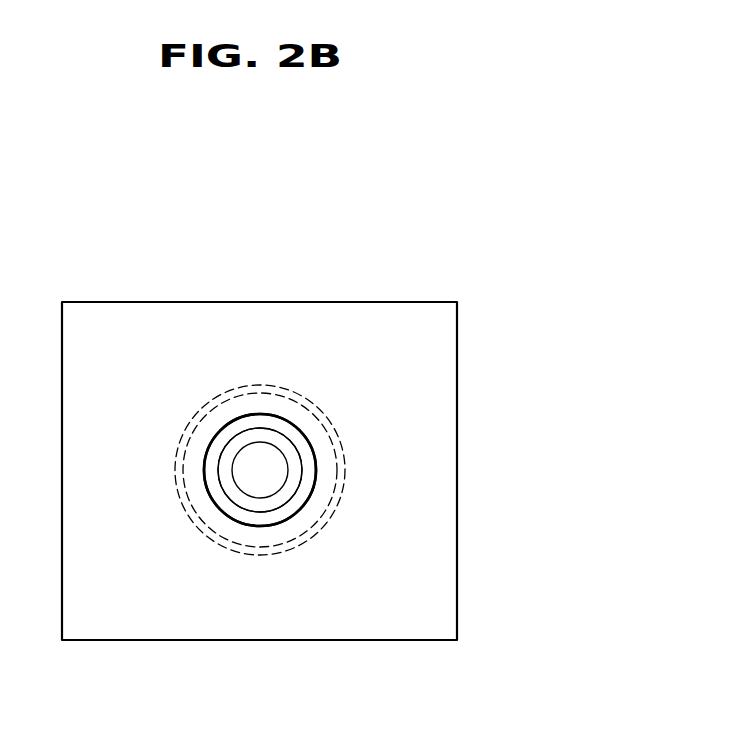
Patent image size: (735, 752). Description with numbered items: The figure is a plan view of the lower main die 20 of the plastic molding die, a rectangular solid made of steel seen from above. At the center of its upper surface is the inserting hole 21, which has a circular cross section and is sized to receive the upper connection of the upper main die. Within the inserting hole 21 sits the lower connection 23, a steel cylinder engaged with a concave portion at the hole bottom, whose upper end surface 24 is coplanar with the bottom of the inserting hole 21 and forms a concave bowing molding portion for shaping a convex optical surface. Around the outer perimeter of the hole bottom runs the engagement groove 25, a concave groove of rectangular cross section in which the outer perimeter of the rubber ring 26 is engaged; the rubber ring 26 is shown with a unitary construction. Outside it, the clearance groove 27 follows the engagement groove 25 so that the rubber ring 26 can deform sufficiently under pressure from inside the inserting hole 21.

The lower main die 20 is at (430, 366).
The inserting hole 21 is at (317, 452).
The lower connection 23 is at (257, 480).
The upper end surface 24 is at (260, 470).
The engagement groove 25 is at (315, 418).
The rubber ring 26 is at (259, 403).
The clearance groove 27 is at (332, 504).